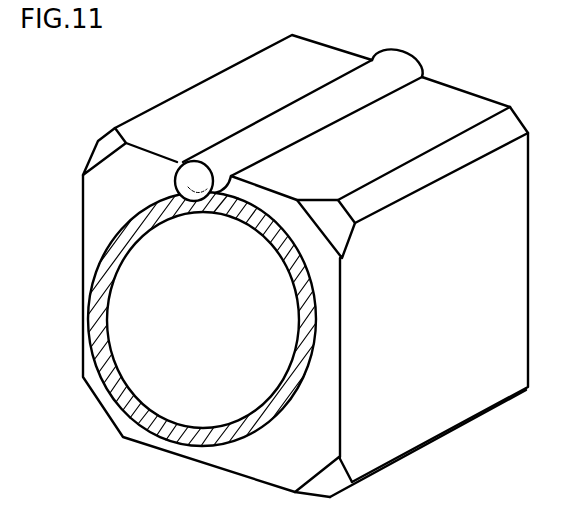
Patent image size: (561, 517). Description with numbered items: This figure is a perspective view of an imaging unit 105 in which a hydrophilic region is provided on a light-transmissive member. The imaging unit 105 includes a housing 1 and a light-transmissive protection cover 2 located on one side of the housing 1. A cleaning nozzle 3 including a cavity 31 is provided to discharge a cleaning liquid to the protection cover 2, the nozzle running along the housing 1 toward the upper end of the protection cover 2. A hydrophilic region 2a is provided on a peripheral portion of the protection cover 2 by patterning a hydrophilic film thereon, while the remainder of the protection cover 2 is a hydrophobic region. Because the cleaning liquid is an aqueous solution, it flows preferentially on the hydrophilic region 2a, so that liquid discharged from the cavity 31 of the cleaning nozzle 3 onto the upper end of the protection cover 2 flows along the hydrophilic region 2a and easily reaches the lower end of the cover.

The imaging unit 105 is at (499, 35).
The housing 1 is at (443, 398).
The protection cover 2 is at (180, 381).
The hydrophilic region 2a is at (120, 383).
The cleaning nozzle 3 is at (392, 68).
The cavity 31 is at (177, 182).